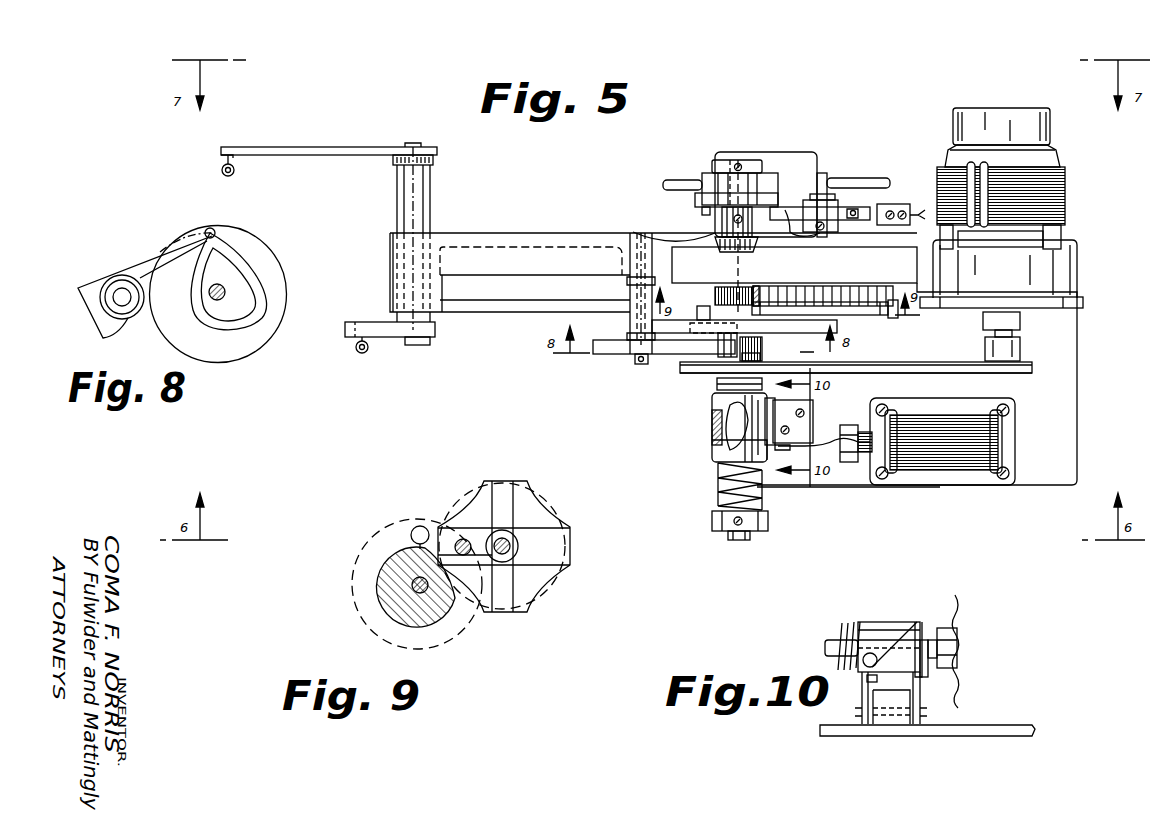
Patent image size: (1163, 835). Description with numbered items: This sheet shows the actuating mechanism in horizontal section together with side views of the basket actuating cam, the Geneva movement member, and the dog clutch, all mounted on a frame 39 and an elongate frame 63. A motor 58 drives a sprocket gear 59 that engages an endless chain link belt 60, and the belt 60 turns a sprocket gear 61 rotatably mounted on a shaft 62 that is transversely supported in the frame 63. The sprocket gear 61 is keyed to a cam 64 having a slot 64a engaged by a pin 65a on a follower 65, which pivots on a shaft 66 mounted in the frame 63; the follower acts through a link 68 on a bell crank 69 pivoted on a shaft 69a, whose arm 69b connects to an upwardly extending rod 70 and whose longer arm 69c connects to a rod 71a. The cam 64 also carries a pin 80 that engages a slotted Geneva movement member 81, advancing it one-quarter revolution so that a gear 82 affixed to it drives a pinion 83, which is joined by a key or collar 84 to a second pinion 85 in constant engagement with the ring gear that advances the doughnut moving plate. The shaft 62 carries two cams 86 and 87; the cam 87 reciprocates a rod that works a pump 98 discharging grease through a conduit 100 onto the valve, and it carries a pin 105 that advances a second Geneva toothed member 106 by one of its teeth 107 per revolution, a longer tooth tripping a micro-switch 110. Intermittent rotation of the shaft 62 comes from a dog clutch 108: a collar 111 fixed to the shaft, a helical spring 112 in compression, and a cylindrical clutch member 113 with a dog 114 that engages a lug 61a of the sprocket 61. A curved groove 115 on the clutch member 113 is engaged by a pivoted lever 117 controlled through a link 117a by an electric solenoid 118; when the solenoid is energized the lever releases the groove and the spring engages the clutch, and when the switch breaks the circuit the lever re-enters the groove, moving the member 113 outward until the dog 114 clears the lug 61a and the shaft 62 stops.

In FIG. 5, the base frame 39 is at (1054, 463).
In FIG. 10, the base frame 39 is at (992, 724).
In FIG. 5, the motor 58 is at (1072, 292).
In FIG. 5, the sprocket gear 59 is at (1025, 375).
In FIG. 5, the endless chain link belt 60 is at (915, 364).
In FIG. 5, the sprocket gear 61 is at (690, 378).
In FIG. 10, the sprocket gear 61 is at (958, 700).
In FIG. 10, the lug 61a is at (948, 613).
In FIG. 5, the shaft 62 is at (742, 541).
In FIG. 10, the shaft 62 is at (824, 647).
In FIG. 5, the elongate frame 63 is at (655, 278).
In FIG. 5, the cam 64 is at (793, 340).
In FIG. 8, the cam 64 is at (221, 354).
In FIG. 9, the cam 64 is at (463, 633).
In FIG. 5, the slot 64a is at (767, 354).
In FIG. 8, the slot 64a is at (262, 287).
In FIG. 5, the follower 65 is at (668, 355).
In FIG. 8, the follower 65 is at (175, 249).
In FIG. 5, the pin 65a is at (735, 331).
In FIG. 8, the pin 65a is at (215, 231).
In FIG. 5, the shaft 66 is at (638, 365).
In FIG. 8, the shaft 66 is at (127, 302).
In FIG. 5, the link 68 is at (500, 310).
In FIG. 5, the bell crank 69 is at (387, 147).
In FIG. 5, the shaft 69a is at (416, 346).
In FIG. 5, the bell crank arm 69b is at (386, 321).
In FIG. 5, the bell crank arm 69c is at (305, 163).
In FIG. 5, the rod 70 is at (368, 350).
In FIG. 5, the rod 71a is at (234, 172).
In FIG. 5, the pin 80 is at (710, 311).
In FIG. 9, the pin 80 is at (465, 556).
In FIG. 5, the Geneva movement member 81 is at (850, 318).
In FIG. 9, the Geneva movement member 81 is at (534, 526).
In FIG. 5, the gear 82 is at (843, 289).
In FIG. 5, the pinion 83 is at (758, 287).
In FIG. 5, the key or collar 84 is at (733, 285).
In FIG. 5, the second pinion 85 is at (752, 250).
In FIG. 5, the cam 86 is at (701, 174).
In FIG. 5, the cam 87 is at (692, 198).
In FIG. 5, the pump 98 is at (808, 173).
In FIG. 5, the second conduit 100 is at (855, 178).
In FIG. 5, the pin 105 is at (698, 216).
In FIG. 5, the second Geneva movement toothed member 106 is at (850, 203).
In FIG. 5, the teeth 107 is at (795, 228).
In FIG. 5, the dog clutch 108 is at (703, 446).
In FIG. 5, the micro-switch 110 is at (892, 200).
In FIG. 5, the collar 111 is at (770, 520).
In FIG. 5, the helical spring 112 is at (716, 488).
In FIG. 10, the helical spring 112 is at (840, 634).
In FIG. 5, the clutch member 113 is at (710, 403).
In FIG. 10, the clutch member 113 is at (873, 622).
In FIG. 5, the dog 114 is at (714, 386).
In FIG. 10, the dog 114 is at (927, 678).
In FIG. 5, the curved groove 115 is at (800, 408).
In FIG. 10, the lever 117 is at (877, 663).
In FIG. 5, the link 117a is at (838, 425).
In FIG. 5, the electric solenoid 118 is at (927, 470).